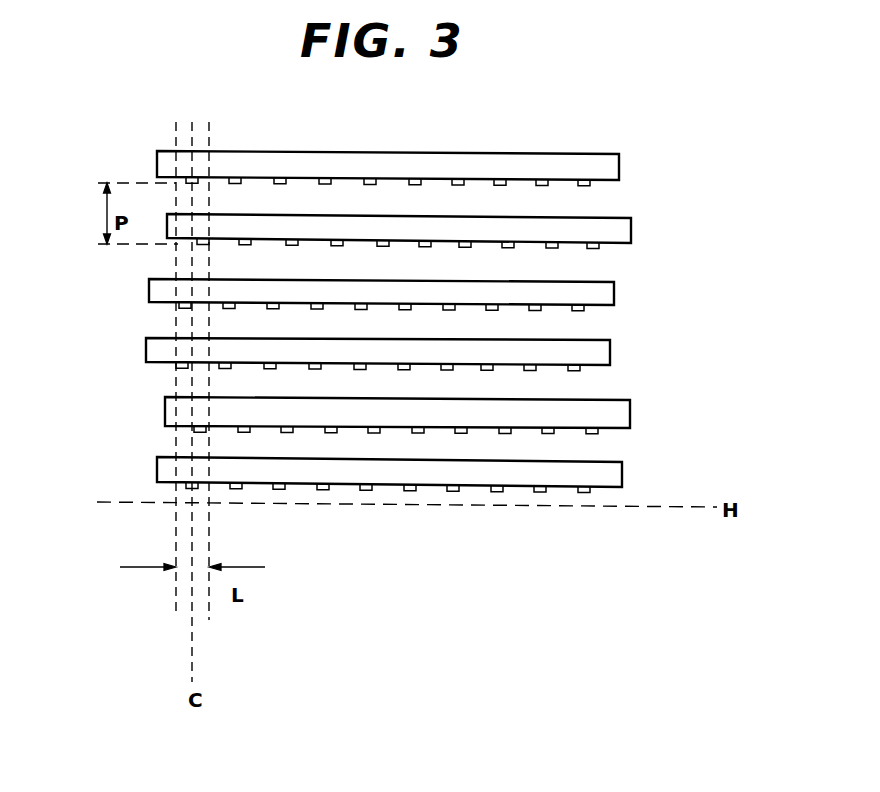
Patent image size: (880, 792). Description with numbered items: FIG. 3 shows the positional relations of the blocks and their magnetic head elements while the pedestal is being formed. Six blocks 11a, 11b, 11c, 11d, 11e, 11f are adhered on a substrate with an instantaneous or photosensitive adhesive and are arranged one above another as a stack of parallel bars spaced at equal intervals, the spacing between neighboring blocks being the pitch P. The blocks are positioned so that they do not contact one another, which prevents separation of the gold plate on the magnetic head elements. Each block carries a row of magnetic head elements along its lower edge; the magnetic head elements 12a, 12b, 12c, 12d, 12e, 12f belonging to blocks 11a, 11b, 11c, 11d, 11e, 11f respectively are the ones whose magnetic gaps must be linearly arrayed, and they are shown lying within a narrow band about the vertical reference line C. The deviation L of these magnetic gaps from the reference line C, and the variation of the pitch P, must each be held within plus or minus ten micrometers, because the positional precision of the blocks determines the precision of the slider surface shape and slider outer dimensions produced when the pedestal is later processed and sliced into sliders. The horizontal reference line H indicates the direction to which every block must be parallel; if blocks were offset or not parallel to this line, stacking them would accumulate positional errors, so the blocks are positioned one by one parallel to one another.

The block 11a is at (442, 487).
The block 11b is at (398, 425).
The block 11c is at (428, 366).
The block 11d is at (396, 305).
The block 11e is at (450, 240).
The block 11f is at (419, 138).
The magnetic head element 12a is at (197, 490).
The magnetic head element 12b is at (196, 431).
The magnetic head element 12c is at (186, 368).
The magnetic head element 12d is at (183, 308).
The magnetic head element 12e is at (209, 245).
The magnetic head element 12f is at (197, 178).